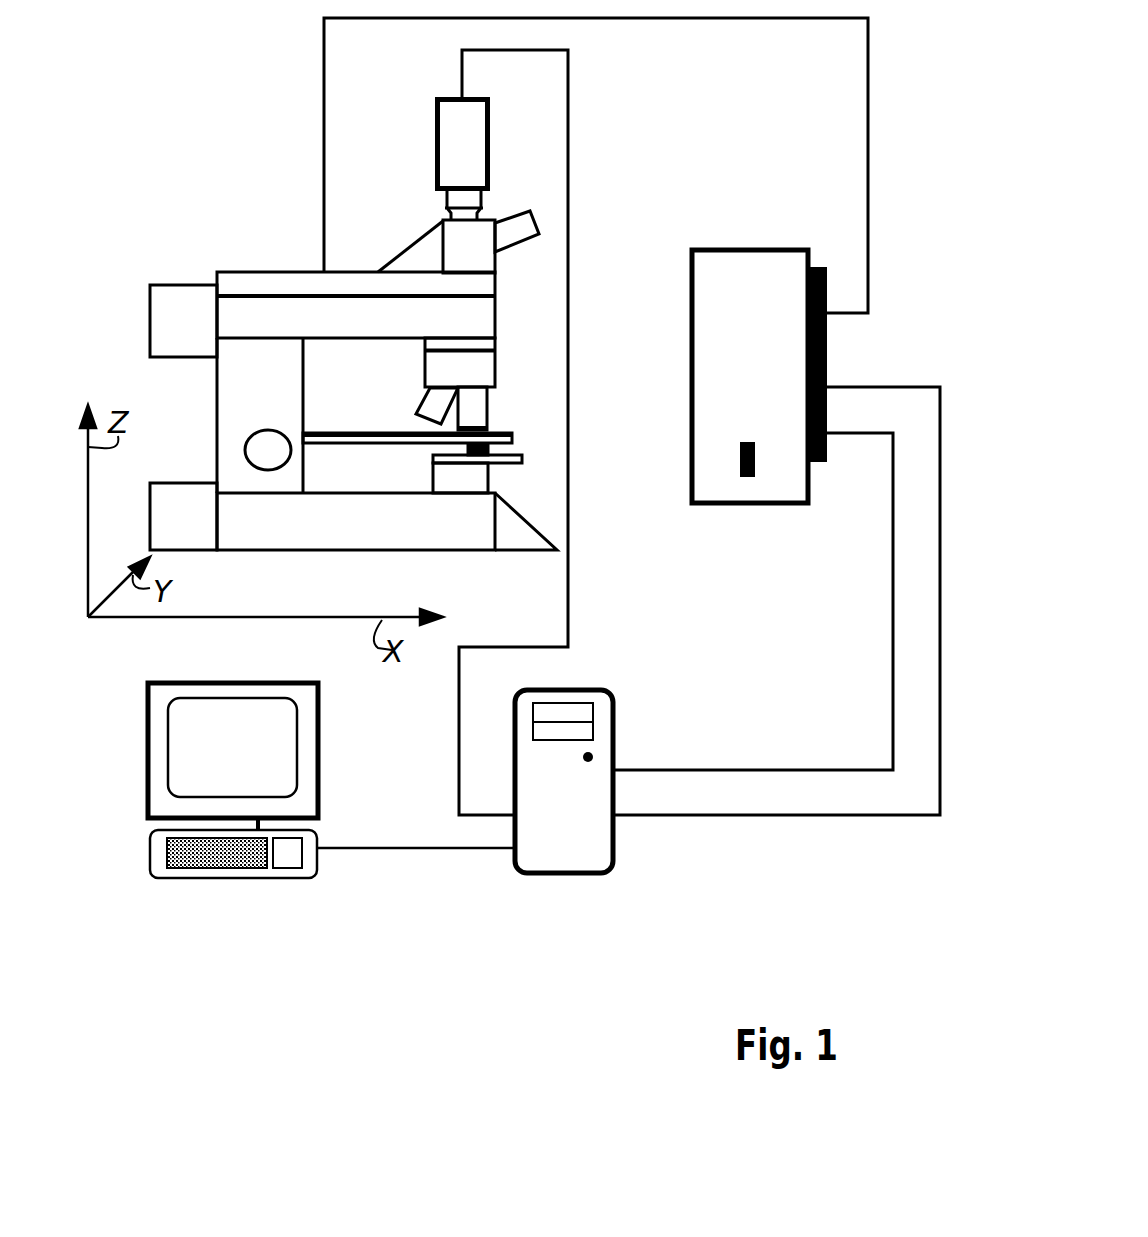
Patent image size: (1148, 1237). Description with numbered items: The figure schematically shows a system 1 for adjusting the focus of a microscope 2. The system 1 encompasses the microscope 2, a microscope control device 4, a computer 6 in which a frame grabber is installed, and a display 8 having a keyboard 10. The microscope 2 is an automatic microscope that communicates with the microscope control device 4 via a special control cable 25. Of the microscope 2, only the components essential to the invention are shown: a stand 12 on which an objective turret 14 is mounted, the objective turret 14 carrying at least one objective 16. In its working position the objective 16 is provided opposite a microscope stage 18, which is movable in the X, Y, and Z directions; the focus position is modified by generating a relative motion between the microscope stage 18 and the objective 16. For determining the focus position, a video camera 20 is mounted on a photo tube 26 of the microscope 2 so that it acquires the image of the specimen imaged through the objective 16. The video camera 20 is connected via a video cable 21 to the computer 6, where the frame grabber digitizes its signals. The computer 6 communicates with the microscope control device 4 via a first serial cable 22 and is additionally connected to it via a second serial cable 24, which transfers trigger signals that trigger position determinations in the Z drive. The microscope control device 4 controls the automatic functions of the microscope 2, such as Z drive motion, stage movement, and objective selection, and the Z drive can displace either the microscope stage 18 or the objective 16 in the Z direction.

The system 1 is at (627, 165).
The microscope 2 is at (235, 270).
The microscope control device 4 is at (771, 262).
The computer 6 is at (597, 708).
The display 8 is at (157, 715).
The keyboard 10 is at (158, 862).
The stand 12 is at (273, 540).
The objective turret 14 is at (492, 373).
The objective 16 is at (476, 413).
The microscope stage 18 is at (383, 432).
The video camera 20 is at (448, 142).
The video cable 21 is at (567, 618).
The first serial cable 22 is at (781, 770).
The second serial cable 24 is at (775, 815).
The control cable 25 is at (869, 168).
The photo tube 26 is at (414, 236).